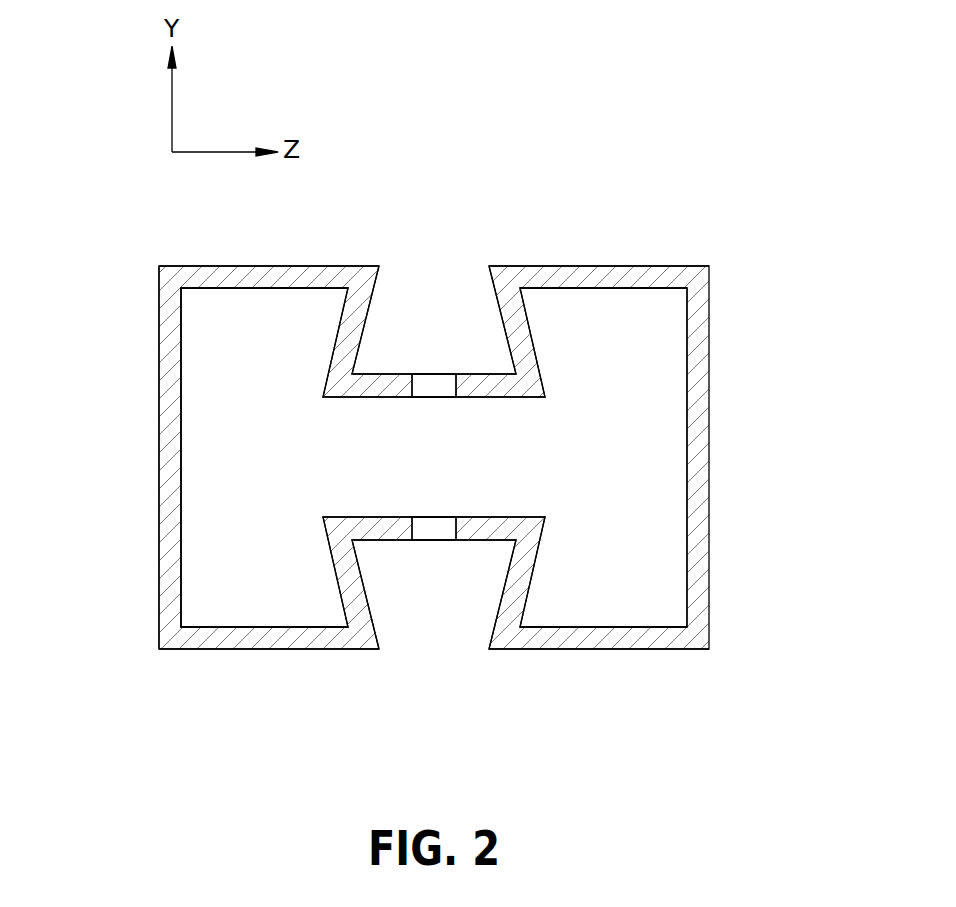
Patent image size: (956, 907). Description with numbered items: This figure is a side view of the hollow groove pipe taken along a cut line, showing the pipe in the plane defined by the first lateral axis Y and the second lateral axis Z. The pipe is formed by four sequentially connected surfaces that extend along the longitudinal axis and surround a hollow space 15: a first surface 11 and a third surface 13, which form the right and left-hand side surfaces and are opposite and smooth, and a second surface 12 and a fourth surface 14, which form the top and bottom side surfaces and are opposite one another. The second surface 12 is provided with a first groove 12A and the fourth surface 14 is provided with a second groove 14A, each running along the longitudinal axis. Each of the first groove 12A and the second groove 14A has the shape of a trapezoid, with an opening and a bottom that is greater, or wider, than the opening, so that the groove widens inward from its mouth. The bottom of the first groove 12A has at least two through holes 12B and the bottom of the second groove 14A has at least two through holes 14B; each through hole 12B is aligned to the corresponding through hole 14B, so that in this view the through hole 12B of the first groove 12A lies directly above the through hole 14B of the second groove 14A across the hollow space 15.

The first surface 11 is at (708, 458).
The second surface 12 is at (600, 266).
The first groove 12A is at (445, 303).
The through hole 12B is at (428, 352).
The third surface 13 is at (158, 457).
The fourth surface 14 is at (600, 649).
The second groove 14A is at (445, 612).
The through hole 14B is at (428, 562).
The hollow space 15 is at (255, 504).